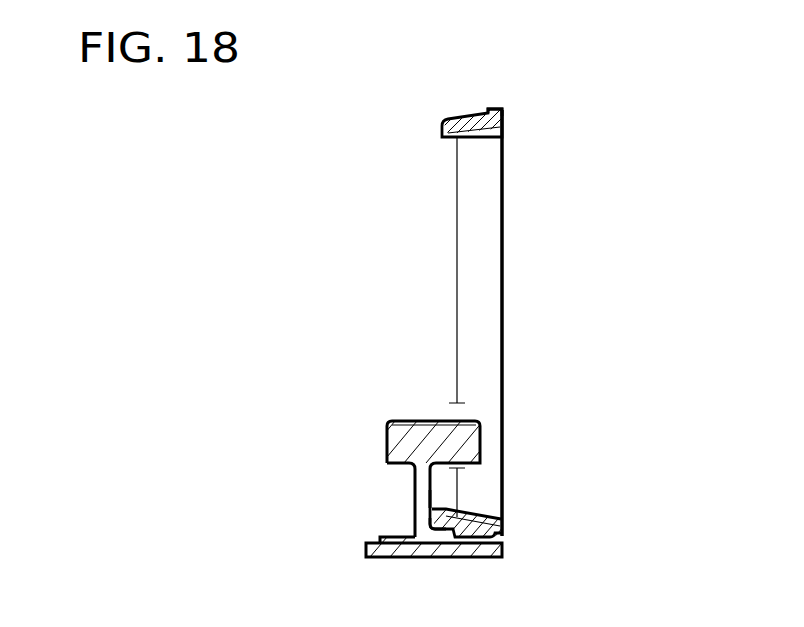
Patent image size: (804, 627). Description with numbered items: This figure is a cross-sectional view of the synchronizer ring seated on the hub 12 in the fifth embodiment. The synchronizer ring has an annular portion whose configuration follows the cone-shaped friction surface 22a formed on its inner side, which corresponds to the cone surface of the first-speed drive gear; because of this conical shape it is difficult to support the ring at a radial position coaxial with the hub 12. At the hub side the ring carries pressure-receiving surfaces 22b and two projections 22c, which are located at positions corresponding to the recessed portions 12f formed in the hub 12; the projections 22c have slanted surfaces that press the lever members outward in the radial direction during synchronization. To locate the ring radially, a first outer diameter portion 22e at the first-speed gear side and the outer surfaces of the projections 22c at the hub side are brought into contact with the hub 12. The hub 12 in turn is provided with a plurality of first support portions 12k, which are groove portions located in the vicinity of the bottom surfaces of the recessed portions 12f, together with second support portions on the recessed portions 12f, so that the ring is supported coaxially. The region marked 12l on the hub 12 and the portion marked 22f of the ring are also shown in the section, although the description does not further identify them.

The hub 12 is at (397, 448).
The web of rail 12l is at (414, 488).
The recessed portion 12f is at (443, 490).
The first support portion 12k is at (372, 537).
The friction surface 22a is at (485, 137).
The pressure-receiving surface 22b is at (438, 135).
The projection 22c is at (442, 510).
The first outer diameter portion 22e is at (495, 108).
The hook portion of clamp 22f is at (441, 527).